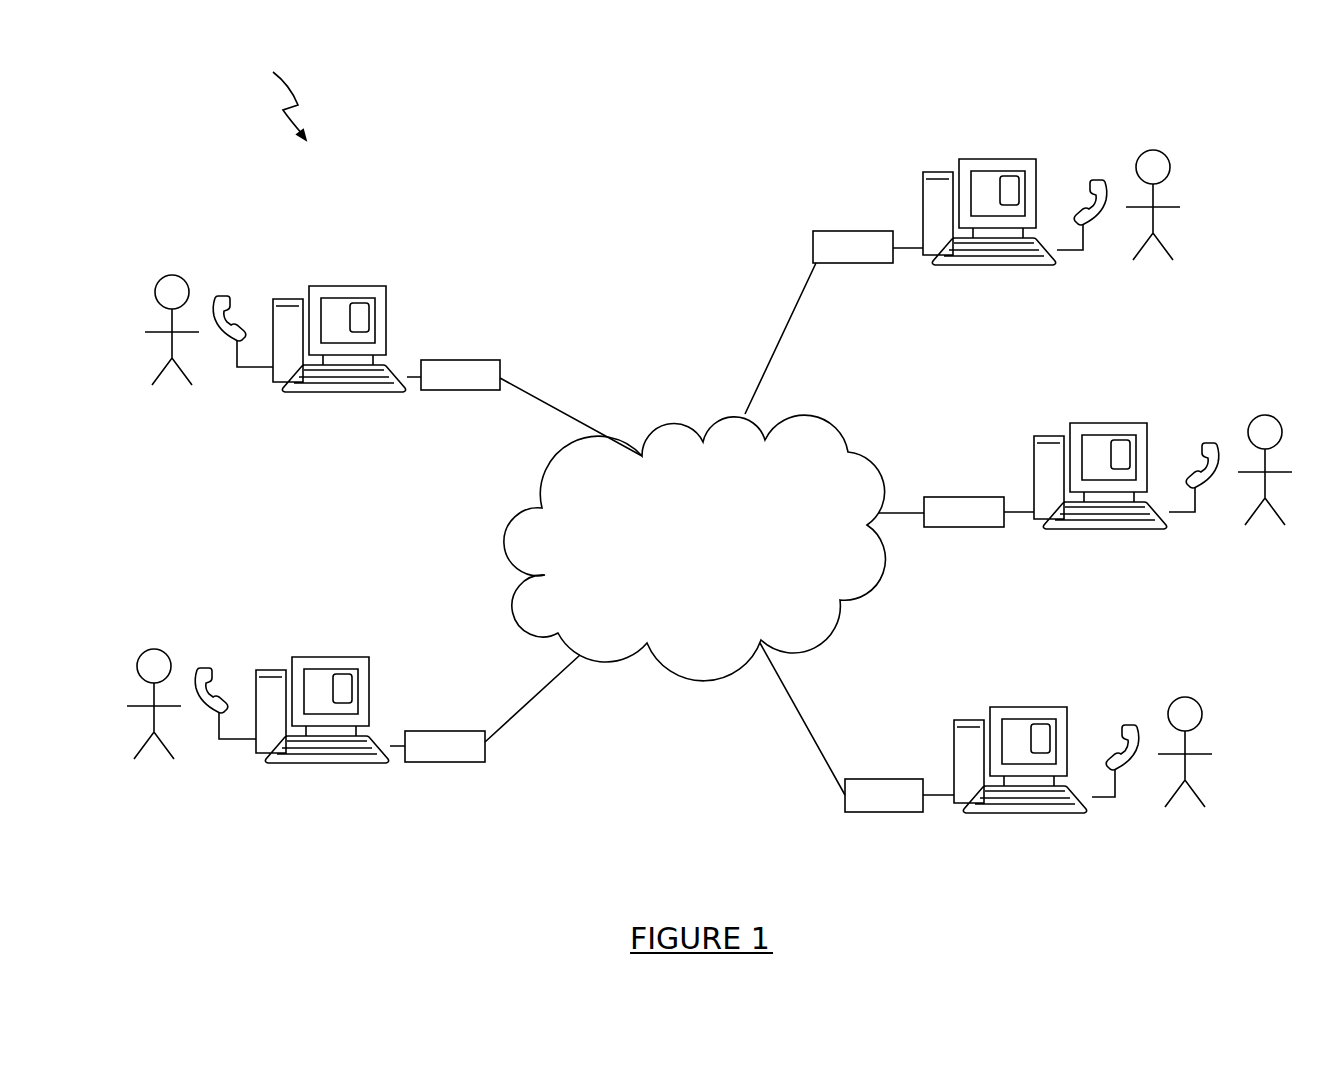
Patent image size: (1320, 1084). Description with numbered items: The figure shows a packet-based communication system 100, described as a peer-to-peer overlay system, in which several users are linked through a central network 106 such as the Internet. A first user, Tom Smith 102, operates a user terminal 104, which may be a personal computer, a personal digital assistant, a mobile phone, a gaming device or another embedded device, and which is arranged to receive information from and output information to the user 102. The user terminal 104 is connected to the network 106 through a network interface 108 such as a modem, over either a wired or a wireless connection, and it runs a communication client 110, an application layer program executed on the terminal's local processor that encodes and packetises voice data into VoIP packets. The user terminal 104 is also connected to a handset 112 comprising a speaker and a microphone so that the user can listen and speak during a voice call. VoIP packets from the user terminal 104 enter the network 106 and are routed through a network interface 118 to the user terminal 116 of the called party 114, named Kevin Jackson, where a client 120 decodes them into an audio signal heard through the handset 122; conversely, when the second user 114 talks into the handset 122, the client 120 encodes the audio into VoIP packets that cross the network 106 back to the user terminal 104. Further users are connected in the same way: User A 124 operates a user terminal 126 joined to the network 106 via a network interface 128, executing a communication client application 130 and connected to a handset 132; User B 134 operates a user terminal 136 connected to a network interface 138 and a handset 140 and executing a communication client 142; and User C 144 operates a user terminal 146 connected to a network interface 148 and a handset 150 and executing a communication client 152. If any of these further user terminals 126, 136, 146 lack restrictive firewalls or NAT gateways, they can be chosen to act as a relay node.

The packet-based communication system 100 is at (276, 92).
The first user 102 is at (1265, 415).
The user terminal 104 is at (1080, 425).
The network 106 is at (505, 537).
The network interface 108 is at (965, 497).
The communication client 110 is at (1121, 440).
The handset 112 is at (1212, 443).
The called party 114 is at (154, 649).
The user terminal 116 is at (305, 658).
The network interface 118 is at (443, 731).
The client 120 is at (343, 674).
The handset 122 is at (203, 668).
The further user 124 is at (173, 275).
The user terminal 126 is at (320, 286).
The network interface 128 is at (460, 360).
The communication client application 130 is at (360, 303).
The handset 132 is at (219, 296).
The further user 134 is at (1153, 150).
The user terminal 136 is at (968, 162).
The network interface 138 is at (855, 231).
The handset 140 is at (1100, 180).
The communication client 142 is at (1010, 176).
The further user 144 is at (1185, 697).
The user terminal 146 is at (1003, 708).
The network interface 148 is at (885, 779).
The handset 150 is at (1130, 725).
The communication client 152 is at (1040, 724).